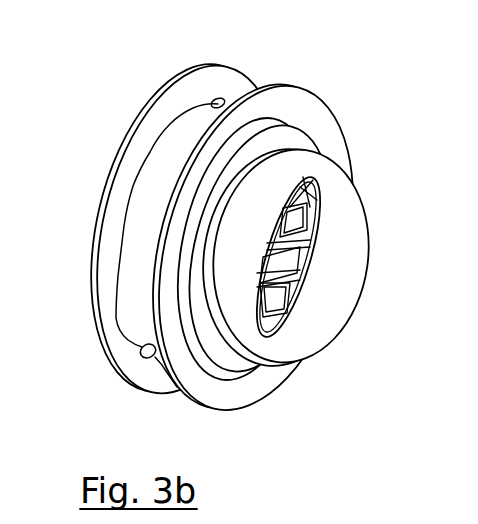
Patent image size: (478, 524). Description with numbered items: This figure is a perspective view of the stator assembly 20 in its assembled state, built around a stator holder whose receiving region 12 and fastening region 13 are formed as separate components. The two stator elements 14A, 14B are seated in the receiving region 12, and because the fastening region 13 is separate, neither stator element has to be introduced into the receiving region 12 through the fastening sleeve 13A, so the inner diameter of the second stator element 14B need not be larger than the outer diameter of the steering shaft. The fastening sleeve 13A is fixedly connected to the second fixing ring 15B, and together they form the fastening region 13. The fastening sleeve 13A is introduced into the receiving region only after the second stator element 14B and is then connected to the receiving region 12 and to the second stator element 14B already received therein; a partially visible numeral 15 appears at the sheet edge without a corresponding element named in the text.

The stator assembly 20 is at (97, 84).
The receiving region 12 is at (136, 244).
The first stator element 14A is at (182, 90).
The second stator element 14B is at (282, 103).
The second fixing ring 15B is at (307, 144).
The fastening sleeve 13A is at (337, 286).
The fastening region 13 is at (282, 380).
The groove (partial numeral) 15 is at (467, 434).